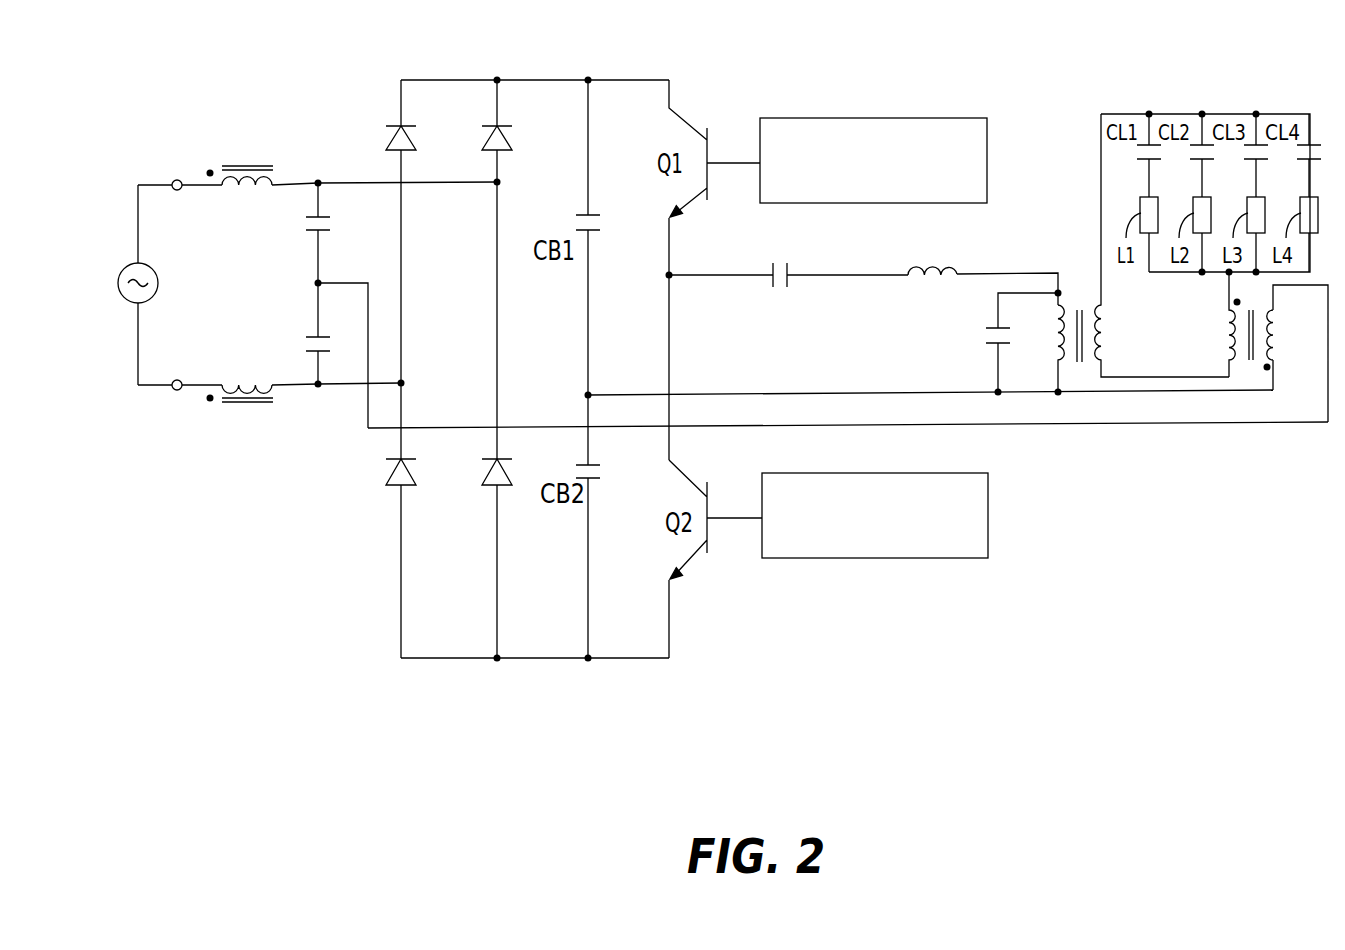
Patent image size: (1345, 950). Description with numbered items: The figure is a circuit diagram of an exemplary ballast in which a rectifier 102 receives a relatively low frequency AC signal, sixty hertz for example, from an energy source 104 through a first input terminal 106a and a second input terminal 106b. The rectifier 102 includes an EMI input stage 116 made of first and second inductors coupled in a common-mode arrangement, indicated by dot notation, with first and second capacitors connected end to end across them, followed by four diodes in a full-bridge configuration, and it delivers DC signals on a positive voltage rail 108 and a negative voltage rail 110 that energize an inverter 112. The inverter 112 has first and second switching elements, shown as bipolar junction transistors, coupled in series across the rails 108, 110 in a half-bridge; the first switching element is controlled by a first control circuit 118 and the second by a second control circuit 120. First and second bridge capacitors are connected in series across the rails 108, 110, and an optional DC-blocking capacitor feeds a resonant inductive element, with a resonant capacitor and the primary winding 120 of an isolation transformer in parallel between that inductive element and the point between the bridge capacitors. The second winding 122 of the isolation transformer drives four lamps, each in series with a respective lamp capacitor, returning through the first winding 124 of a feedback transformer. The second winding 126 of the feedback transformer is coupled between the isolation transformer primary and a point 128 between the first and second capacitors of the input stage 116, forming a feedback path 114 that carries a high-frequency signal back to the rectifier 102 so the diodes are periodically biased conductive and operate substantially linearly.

The rectifier 102 is at (468, 240).
The energy source 104 is at (140, 304).
The first input terminal 106a is at (177, 180).
The second input terminal 106b is at (177, 390).
The positive voltage rail 108 is at (628, 78).
The negative voltage rail 110 is at (618, 658).
The inverter 112 is at (787, 353).
The feedback path 114 is at (1125, 423).
The EMI input stage 116 is at (257, 298).
The first control circuit 118 is at (887, 118).
The second control circuit 120 is at (885, 558).
The second winding of the isolation transformer 122 is at (1099, 303).
The first winding of the feedback transformer 124 is at (1229, 309).
The second winding of the feedback transformer 126 is at (1296, 353).
The point between the first and second capacitors 128 is at (318, 283).